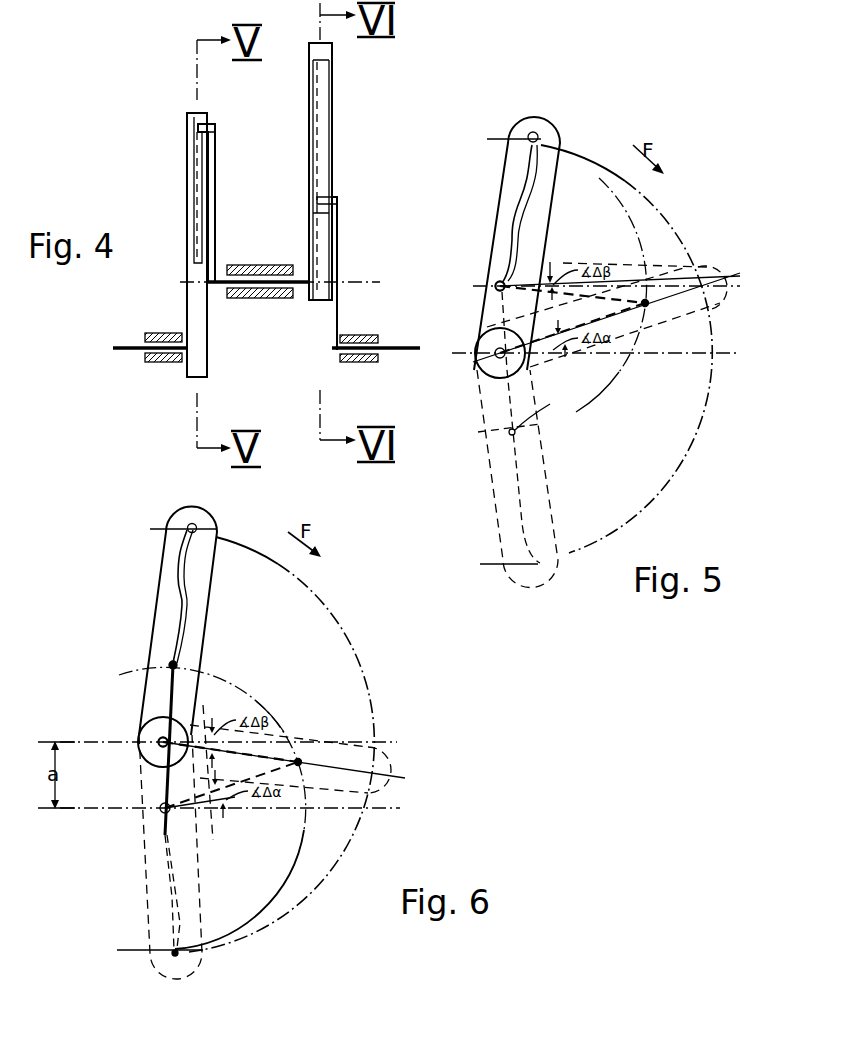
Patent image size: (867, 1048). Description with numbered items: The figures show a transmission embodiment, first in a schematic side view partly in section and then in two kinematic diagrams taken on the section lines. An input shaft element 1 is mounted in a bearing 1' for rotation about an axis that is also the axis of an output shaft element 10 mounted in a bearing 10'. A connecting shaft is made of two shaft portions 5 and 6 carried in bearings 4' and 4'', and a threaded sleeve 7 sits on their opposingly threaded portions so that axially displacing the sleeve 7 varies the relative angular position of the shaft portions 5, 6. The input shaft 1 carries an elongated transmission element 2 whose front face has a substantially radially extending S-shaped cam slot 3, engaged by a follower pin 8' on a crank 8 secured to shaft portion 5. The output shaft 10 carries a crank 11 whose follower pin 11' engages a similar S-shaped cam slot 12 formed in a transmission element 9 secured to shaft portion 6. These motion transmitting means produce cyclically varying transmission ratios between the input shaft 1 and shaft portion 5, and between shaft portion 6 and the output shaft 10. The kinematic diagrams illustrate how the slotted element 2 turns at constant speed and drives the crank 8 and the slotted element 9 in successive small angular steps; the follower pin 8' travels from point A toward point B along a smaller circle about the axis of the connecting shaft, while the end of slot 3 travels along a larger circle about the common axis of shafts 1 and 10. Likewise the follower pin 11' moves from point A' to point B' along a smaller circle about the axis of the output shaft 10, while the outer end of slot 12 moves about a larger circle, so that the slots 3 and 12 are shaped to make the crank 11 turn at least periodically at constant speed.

In FIG. 4, the input shaft element 1 is at (147, 375).
In FIG. 5, the input shaft element 1 is at (593, 358).
In FIG. 4, the bearing 1' is at (163, 368).
In FIG. 4, the elongated transmission element 2 is at (197, 312).
In FIG. 5, the elongated transmission element 2 is at (540, 208).
In FIG. 4, the S-shaped cam slot 3 is at (203, 160).
In FIG. 5, the S-shaped cam slot 3 is at (511, 213).
In FIG. 4, the bearing 4' is at (260, 256).
In FIG. 4, the bearing 4'' is at (260, 268).
In FIG. 4, the shaft portion 5 is at (247, 284).
In FIG. 5, the shaft portion 5 is at (496, 285).
In FIG. 6, the shaft portion 5 is at (158, 740).
In FIG. 5, the shaft portion 6 is at (499, 285).
In FIG. 6, the shaft portion 6 is at (162, 741).
In FIG. 5, the threaded sleeve 7 is at (500, 286).
In FIG. 6, the threaded sleeve 7 is at (163, 742).
In FIG. 4, the crank 8 is at (254, 203).
In FIG. 5, the crank 8 is at (607, 256).
In FIG. 4, the follower pin 8' is at (228, 119).
In FIG. 5, the follower pin 8' is at (609, 256).
In FIG. 4, the transmission element 9 is at (313, 163).
In FIG. 6, the transmission element 9 is at (207, 568).
In FIG. 4, the output shaft element 10 is at (376, 370).
In FIG. 6, the output shaft element 10 is at (230, 824).
In FIG. 4, the bearing 10' is at (369, 337).
In FIG. 4, the crank 11 is at (360, 273).
In FIG. 6, the crank 11 is at (249, 807).
In FIG. 4, the follower pin 11' is at (357, 187).
In FIG. 6, the follower pin 11' is at (233, 793).
In FIG. 4, the S-shaped cam slot 12 is at (327, 100).
In FIG. 6, the S-shaped cam slot 12 is at (180, 590).